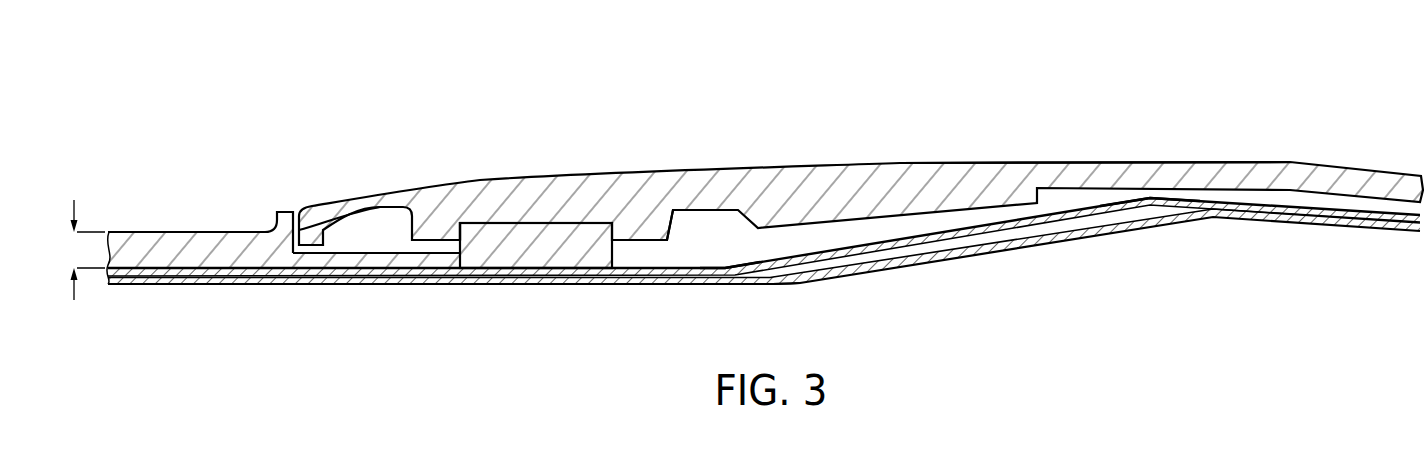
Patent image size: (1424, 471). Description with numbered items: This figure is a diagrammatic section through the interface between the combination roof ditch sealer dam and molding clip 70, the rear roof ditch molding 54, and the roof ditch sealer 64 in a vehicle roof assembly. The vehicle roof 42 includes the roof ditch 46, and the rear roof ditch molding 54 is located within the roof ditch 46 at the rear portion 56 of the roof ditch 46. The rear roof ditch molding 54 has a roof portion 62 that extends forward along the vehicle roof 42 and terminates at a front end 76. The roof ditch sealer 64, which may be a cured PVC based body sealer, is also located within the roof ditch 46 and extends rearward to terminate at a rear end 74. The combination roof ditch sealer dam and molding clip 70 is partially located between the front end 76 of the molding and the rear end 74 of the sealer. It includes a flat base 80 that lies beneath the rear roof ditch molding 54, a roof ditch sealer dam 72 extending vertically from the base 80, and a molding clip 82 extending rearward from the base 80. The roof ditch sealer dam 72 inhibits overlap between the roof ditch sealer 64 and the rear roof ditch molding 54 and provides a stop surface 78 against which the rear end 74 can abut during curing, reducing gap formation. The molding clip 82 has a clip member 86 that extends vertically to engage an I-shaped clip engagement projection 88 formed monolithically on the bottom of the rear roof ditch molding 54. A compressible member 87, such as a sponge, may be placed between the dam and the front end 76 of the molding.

The vehicle roof 42 is at (1212, 188).
The roof ditch 46 is at (687, 267).
The rear roof ditch molding 54 is at (935, 160).
The rear portion 56 is at (1125, 190).
The roof portion 62 is at (1040, 130).
The roof ditch sealer 64 is at (80, 250).
The combination roof ditch sealer dam and molding clip 70 is at (409, 272).
The roof ditch sealer dam 72 is at (286, 211).
The rear end 74 is at (196, 262).
The front end 76 is at (401, 206).
The stop surface 78 is at (275, 232).
The base 80 is at (327, 276).
The molding clip 82 is at (560, 272).
The clip member 86 is at (538, 222).
The compressible member 87 is at (348, 207).
The clip engagement projection 88 is at (645, 232).